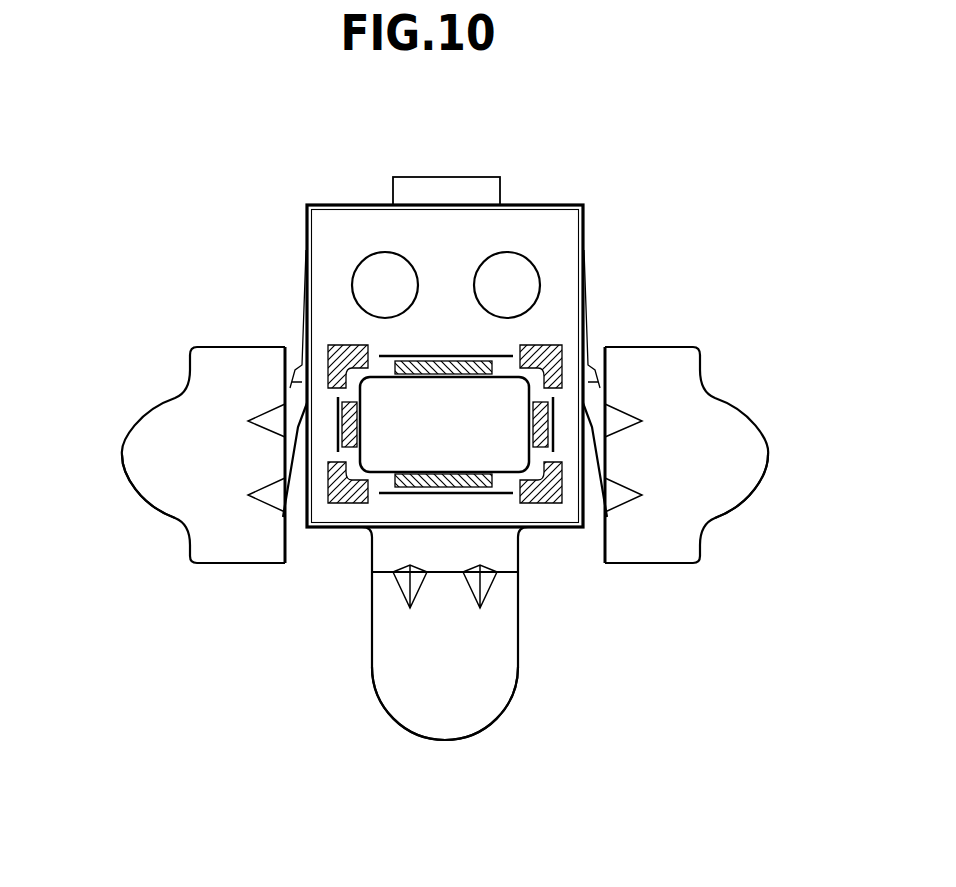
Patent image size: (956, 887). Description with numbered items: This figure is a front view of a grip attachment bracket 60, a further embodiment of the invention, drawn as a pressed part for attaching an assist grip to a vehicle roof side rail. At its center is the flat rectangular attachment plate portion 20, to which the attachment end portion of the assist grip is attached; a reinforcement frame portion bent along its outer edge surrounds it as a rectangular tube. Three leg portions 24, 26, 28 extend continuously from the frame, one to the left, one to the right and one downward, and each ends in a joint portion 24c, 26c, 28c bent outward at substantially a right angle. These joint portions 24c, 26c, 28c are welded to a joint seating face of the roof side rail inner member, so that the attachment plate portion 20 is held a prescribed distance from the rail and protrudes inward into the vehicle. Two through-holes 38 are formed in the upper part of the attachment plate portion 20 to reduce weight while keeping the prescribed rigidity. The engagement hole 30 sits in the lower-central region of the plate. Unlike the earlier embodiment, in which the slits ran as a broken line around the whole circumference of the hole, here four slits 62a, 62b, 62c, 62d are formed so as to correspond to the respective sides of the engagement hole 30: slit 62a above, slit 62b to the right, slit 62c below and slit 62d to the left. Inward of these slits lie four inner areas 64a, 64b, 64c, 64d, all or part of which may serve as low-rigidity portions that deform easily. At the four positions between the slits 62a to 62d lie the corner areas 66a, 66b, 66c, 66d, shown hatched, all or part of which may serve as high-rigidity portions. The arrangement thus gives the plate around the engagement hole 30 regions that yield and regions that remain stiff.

The grip attachment bracket 60 is at (218, 180).
The attachment plate portion 20 is at (325, 242).
The through-holes 38 is at (408, 265).
The engagement hole 30 is at (497, 473).
The leg portion 24 is at (290, 385).
The joint portion 24c is at (155, 486).
The leg portion 26 is at (606, 384).
The joint portion 26c is at (717, 500).
The leg portion 28 is at (395, 548).
The joint portion 28c is at (482, 667).
The slit 62a is at (437, 360).
The slit 62b is at (553, 405).
The slit 62c is at (437, 487).
The slit 62d is at (340, 404).
The inner area 64a is at (462, 370).
The inner area 64b is at (553, 440).
The inner area 64c is at (462, 493).
The inner area 64d is at (338, 438).
The corner area 66a is at (543, 345).
The corner area 66b is at (545, 480).
The corner area 66c is at (345, 503).
The corner area 66d is at (347, 345).